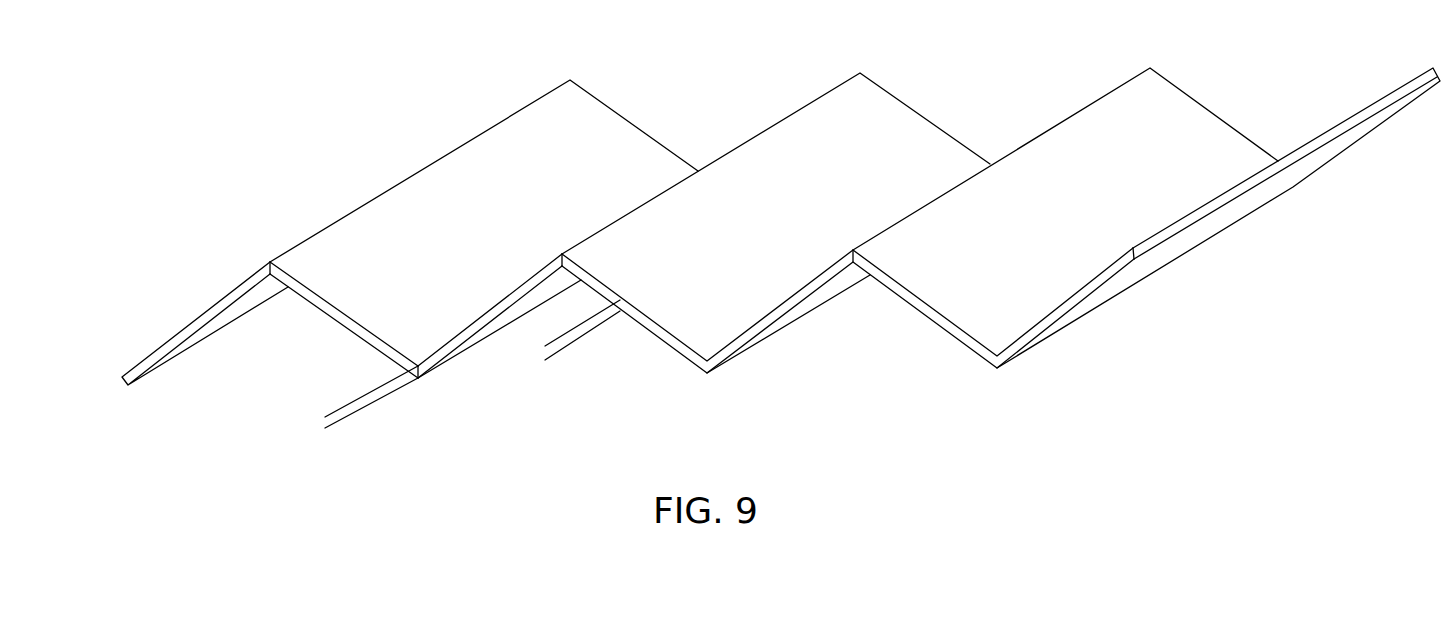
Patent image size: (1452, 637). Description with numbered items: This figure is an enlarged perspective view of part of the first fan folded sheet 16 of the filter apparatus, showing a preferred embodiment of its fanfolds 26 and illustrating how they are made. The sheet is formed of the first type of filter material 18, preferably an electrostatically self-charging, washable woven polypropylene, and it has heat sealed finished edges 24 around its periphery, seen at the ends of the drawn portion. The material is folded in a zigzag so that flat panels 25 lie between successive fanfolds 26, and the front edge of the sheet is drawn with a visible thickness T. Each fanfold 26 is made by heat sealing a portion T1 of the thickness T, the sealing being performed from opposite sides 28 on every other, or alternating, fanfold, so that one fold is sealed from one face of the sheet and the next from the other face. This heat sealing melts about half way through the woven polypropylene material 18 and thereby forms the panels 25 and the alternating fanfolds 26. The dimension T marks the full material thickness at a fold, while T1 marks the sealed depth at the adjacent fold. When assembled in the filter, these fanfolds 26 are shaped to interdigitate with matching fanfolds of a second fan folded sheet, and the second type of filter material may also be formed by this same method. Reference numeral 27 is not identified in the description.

The first fan folded sheet 16 is at (871, 367).
The first type of filter material 18 is at (1195, 128).
The heat sealed finished edges 24 is at (972, 342).
The panels 25 is at (692, 310).
The fanfolds 26 is at (437, 328).
The valley fold 27 is at (419, 357).
The opposite sides 28 is at (490, 332).
The thickness T is at (547, 312).
The portion of the thickness T1 is at (326, 380).